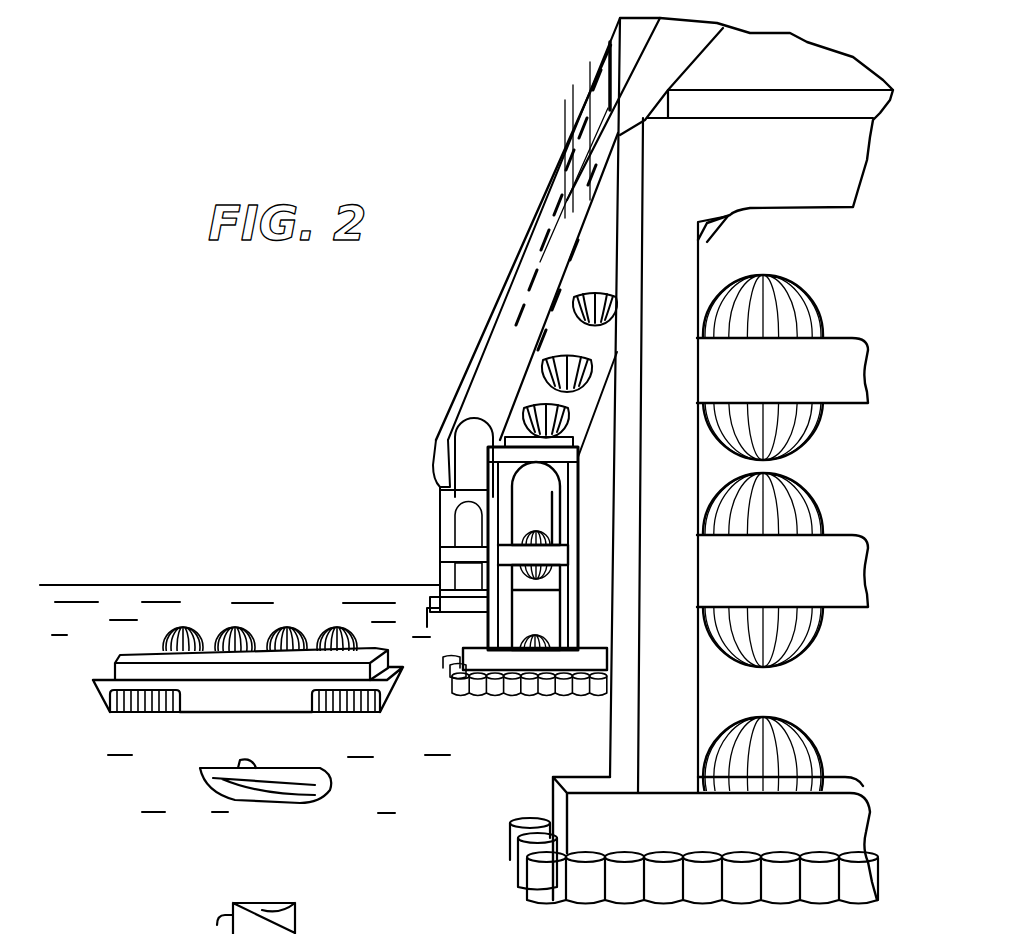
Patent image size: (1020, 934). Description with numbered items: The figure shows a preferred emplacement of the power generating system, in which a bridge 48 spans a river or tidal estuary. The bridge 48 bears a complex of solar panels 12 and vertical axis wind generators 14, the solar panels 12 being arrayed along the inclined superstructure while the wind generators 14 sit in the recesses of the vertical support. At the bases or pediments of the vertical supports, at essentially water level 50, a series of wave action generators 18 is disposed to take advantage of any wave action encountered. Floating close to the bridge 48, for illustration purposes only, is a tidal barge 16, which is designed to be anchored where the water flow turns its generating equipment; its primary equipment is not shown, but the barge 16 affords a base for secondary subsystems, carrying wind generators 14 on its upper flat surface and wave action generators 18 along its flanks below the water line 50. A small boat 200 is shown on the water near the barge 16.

The solar panels 12 is at (548, 180).
The vertical axis wind generators 14 is at (596, 300).
The tidal barge 16 is at (140, 671).
The wave action generators 18 is at (147, 714).
The bridge 48 is at (464, 88).
The water surface 50 is at (402, 608).
The boat 200 is at (218, 774).